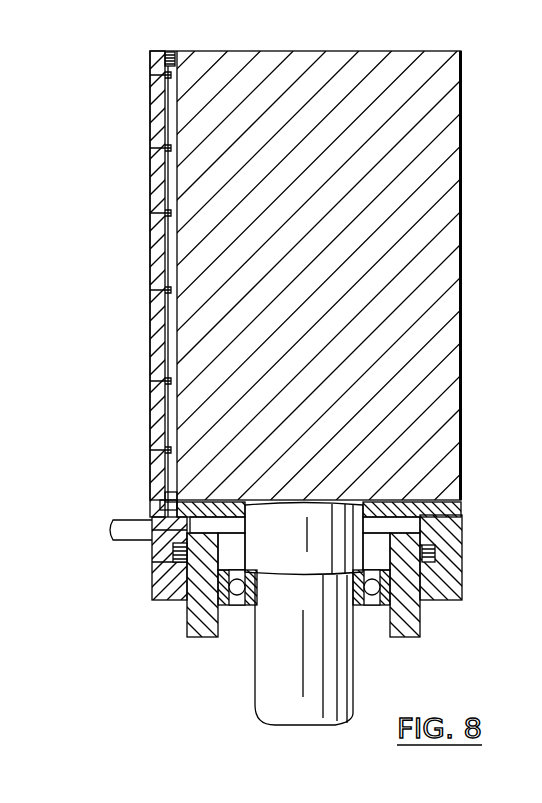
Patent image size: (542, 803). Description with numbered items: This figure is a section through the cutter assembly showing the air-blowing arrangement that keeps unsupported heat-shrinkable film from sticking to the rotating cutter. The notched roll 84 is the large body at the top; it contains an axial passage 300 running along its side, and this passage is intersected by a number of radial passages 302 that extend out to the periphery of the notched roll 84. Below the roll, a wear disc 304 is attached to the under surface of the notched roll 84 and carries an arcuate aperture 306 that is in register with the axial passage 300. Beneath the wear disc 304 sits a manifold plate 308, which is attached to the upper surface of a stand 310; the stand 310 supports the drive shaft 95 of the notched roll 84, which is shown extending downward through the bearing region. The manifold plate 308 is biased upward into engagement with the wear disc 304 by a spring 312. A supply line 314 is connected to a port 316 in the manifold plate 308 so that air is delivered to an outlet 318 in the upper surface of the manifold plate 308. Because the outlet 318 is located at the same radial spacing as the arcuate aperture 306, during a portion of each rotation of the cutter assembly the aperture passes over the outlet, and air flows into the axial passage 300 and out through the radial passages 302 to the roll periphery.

The notched roll 84 is at (318, 83).
The axial passage 300 is at (163, 168).
The radial passages 302 is at (165, 212).
The wear disc 304 is at (435, 505).
The arcuate aperture 306 is at (167, 496).
The outlet 318 is at (170, 504).
The supply line 314 is at (127, 532).
The port 316 is at (162, 547).
The manifold plate 308 is at (166, 562).
The stand 310 is at (166, 597).
The spring 312 is at (434, 553).
The drive shaft 95 is at (268, 670).